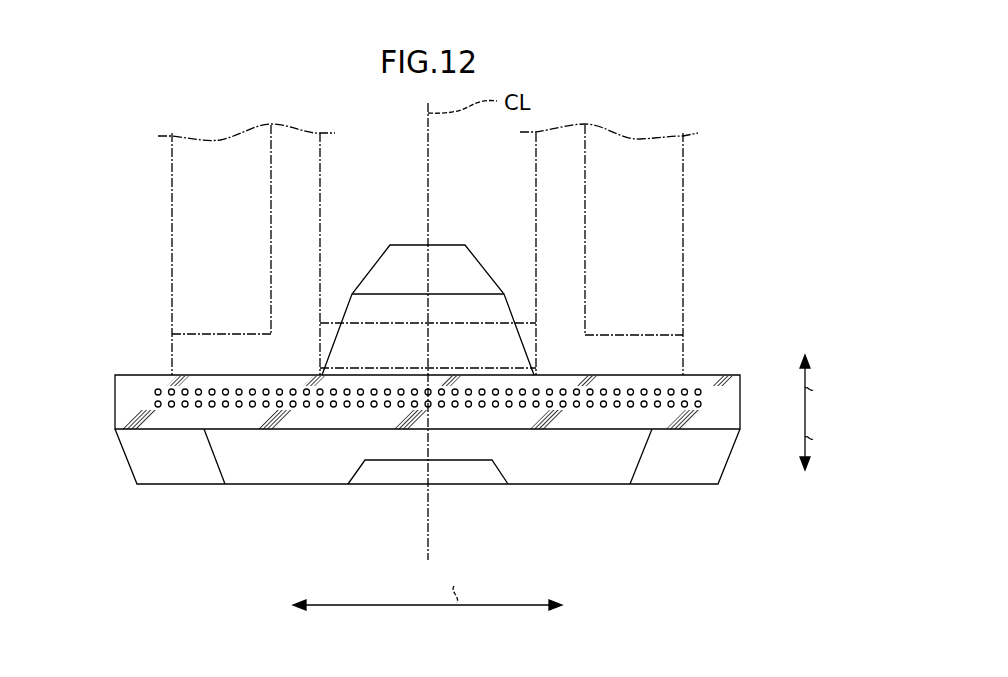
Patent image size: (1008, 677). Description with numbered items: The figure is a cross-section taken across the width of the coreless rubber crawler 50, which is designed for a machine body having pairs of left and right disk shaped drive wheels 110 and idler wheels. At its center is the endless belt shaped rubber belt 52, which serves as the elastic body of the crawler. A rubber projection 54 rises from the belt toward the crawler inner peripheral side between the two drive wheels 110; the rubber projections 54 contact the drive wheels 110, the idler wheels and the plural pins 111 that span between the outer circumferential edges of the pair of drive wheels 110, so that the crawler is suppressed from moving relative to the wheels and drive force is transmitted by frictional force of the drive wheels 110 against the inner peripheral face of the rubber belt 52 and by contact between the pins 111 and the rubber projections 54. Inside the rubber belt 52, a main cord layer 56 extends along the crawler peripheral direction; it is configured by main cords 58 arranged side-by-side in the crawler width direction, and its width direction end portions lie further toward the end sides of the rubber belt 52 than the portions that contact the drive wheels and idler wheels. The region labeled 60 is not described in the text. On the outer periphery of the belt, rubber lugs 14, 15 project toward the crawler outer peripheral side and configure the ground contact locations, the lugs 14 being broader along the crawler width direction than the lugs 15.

The lug 14 is at (128, 470).
The lug 15 is at (640, 469).
The rubber crawler 50 is at (113, 348).
The rubber belt 52 is at (742, 386).
The rubber projection 54 is at (493, 276).
The main cord layer 56 is at (450, 343).
The main cord 58 is at (672, 386).
The nozzle rows 60 is at (707, 385).
The drive wheel 110 is at (172, 164).
The pin 111 is at (458, 322).